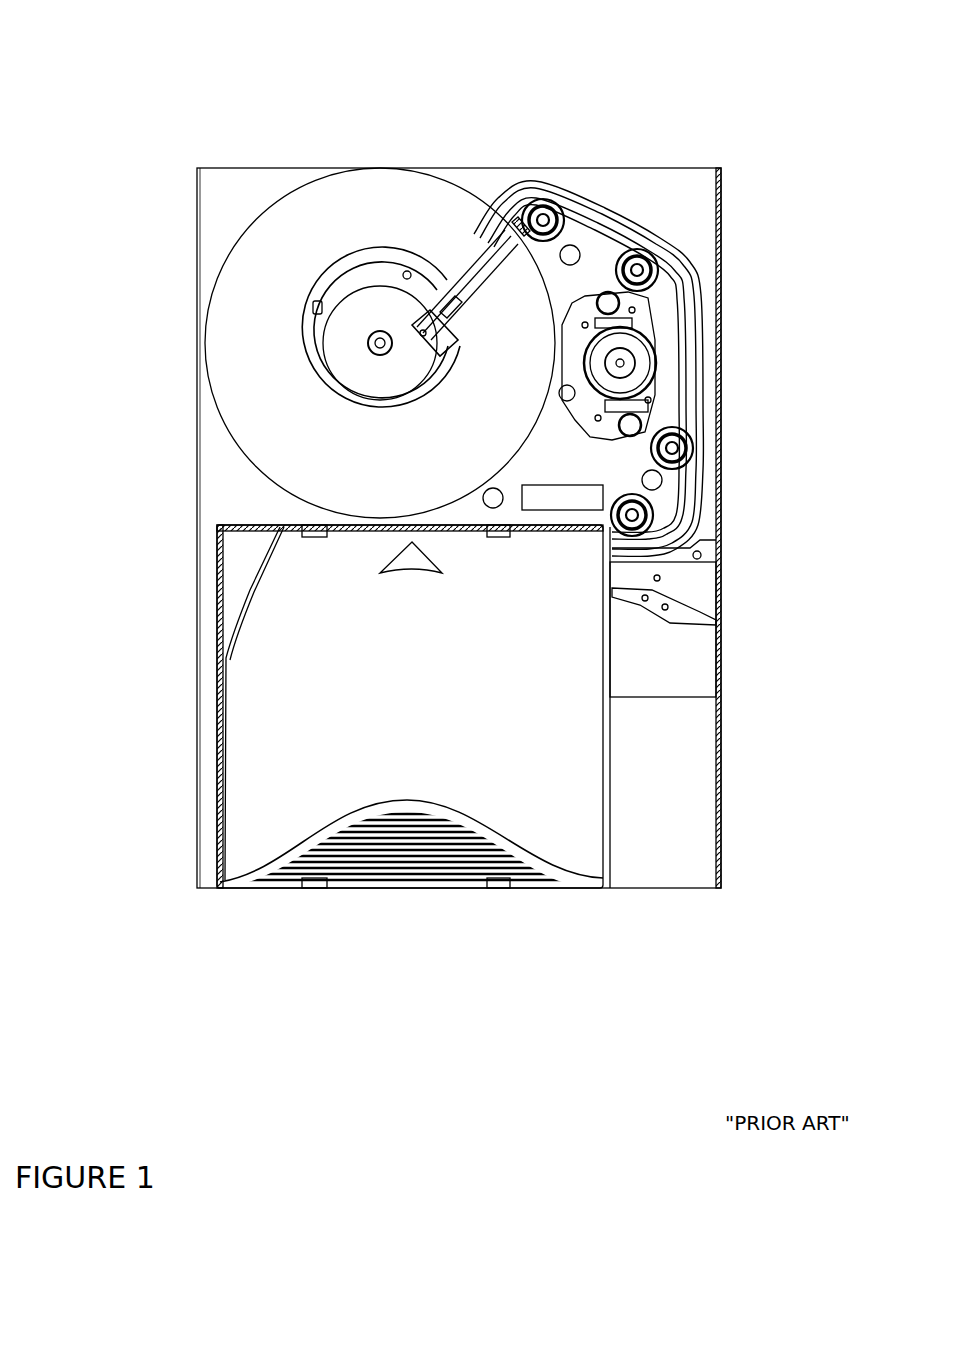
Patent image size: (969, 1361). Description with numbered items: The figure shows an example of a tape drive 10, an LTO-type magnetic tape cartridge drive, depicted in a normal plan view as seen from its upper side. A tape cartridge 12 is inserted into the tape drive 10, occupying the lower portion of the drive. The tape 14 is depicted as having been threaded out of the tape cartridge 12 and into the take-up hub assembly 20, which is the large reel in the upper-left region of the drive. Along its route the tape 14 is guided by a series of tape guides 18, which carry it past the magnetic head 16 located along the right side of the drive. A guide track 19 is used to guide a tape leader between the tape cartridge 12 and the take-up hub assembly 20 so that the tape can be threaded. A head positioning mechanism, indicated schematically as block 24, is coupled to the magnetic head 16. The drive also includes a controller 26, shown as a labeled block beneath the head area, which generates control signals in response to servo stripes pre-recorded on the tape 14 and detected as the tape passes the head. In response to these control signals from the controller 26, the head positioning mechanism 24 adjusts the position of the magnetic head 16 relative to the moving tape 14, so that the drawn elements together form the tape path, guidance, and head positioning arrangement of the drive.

The tape drive 10 is at (112, 74).
The tape cartridge 12 is at (383, 740).
The tape 14 is at (665, 505).
The magnetic head 16 is at (718, 303).
The tape guides 18 is at (560, 200).
The guide track 19 is at (470, 195).
The take-up hub assembly 20 is at (350, 315).
The head positioning mechanism 24 is at (588, 408).
The controller 26 is at (562, 482).